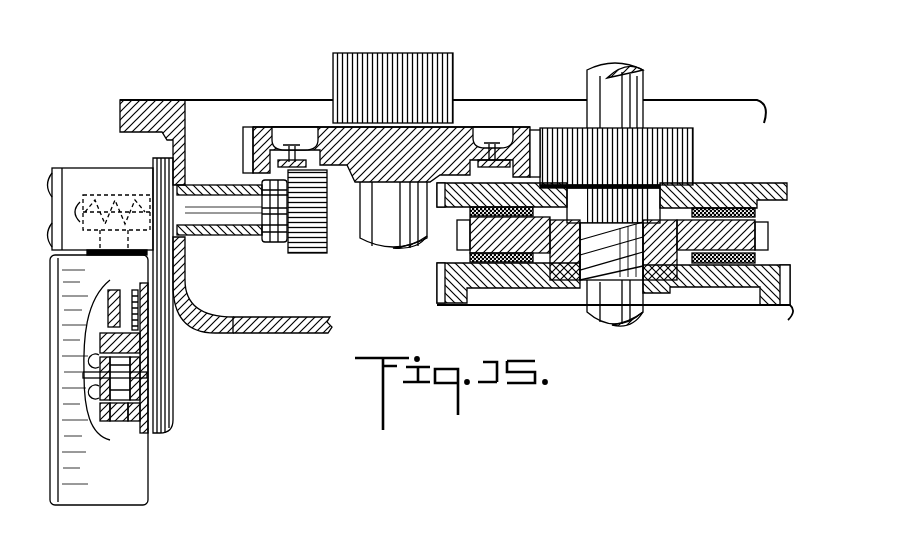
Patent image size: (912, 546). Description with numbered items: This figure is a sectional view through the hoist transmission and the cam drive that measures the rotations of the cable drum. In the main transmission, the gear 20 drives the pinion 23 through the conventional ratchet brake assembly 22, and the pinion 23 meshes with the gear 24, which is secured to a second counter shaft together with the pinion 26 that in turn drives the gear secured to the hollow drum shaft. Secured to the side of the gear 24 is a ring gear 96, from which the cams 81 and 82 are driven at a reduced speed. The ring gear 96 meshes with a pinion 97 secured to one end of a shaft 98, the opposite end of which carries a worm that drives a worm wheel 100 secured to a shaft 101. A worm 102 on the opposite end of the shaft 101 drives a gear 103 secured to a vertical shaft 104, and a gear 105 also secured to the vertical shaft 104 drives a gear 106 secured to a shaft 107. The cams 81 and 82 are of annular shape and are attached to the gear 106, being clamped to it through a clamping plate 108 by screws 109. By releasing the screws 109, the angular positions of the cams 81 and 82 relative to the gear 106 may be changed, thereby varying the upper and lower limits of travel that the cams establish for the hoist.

The gear 20 is at (792, 308).
The ratchet brake assembly 22 is at (772, 232).
The pinion 23 is at (693, 151).
The gear 24 is at (457, 140).
The pinion 26 is at (338, 53).
The cam 81 is at (108, 423).
The cam 82 is at (135, 426).
The ring gear 96 is at (306, 145).
The pinion 97 is at (320, 254).
The shaft 98 is at (223, 188).
The worm wheel 100 is at (100, 200).
The shaft 101 is at (125, 263).
The worm 102 is at (108, 289).
The gear 103 is at (137, 310).
The vertical shaft 104 is at (208, 290).
The gear 105 is at (200, 314).
The gear 106 is at (142, 435).
The shaft 107 is at (150, 378).
The clamping plate 108 is at (100, 413).
The screws 109 is at (97, 393).